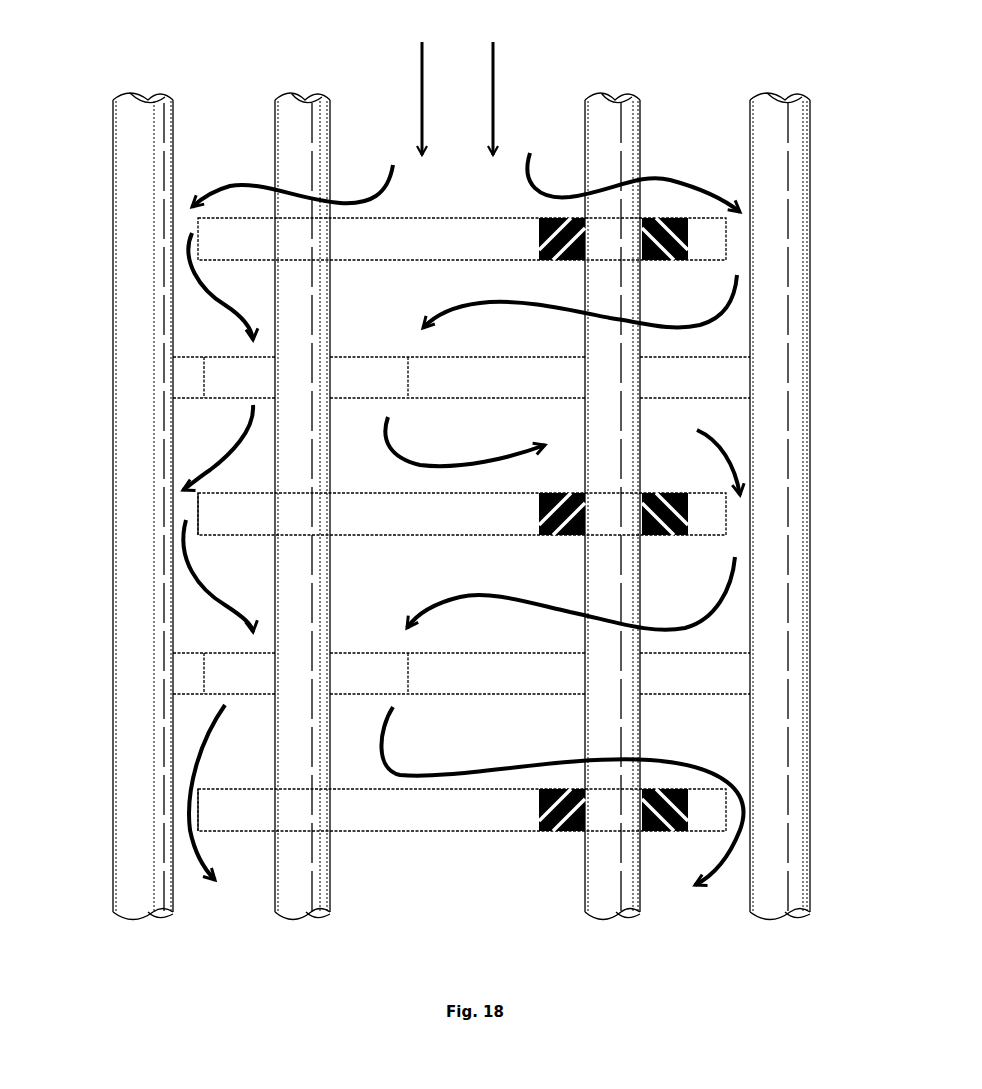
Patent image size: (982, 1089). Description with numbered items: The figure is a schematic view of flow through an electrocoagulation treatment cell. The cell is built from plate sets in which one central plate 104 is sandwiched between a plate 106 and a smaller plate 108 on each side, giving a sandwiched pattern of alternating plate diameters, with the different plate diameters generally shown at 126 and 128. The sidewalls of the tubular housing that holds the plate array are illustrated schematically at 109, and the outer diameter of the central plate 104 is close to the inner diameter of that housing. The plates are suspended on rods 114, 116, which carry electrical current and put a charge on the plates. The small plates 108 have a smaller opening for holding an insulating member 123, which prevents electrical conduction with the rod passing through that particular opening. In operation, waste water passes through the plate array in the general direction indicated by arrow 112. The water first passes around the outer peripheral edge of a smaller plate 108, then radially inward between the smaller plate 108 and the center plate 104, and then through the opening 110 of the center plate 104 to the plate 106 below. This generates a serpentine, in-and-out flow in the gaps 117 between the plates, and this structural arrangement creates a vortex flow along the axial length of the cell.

The central plate 104 is at (715, 367).
The plate 106 is at (460, 220).
The smaller plate 108 is at (408, 521).
The sidewalls of the tubular housing 109 is at (133, 459).
The opening of the center plate 110 is at (358, 378).
The arrow indicating flow direction 112 is at (497, 62).
The rod 114 is at (290, 902).
The rod 116 is at (612, 902).
The gaps between the plates 117 is at (198, 330).
The insulating member 123 is at (664, 221).
The plate diameter 126 is at (170, 388).
The plate diameter 128 is at (192, 512).